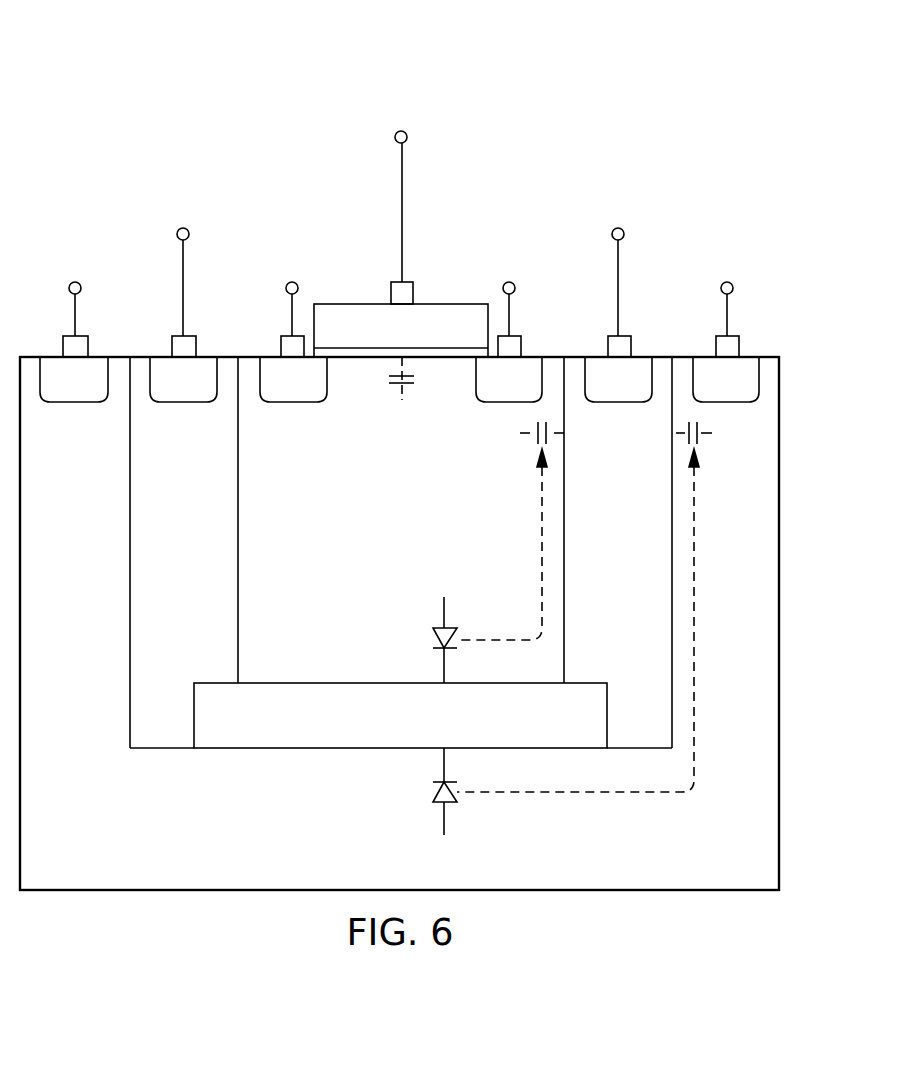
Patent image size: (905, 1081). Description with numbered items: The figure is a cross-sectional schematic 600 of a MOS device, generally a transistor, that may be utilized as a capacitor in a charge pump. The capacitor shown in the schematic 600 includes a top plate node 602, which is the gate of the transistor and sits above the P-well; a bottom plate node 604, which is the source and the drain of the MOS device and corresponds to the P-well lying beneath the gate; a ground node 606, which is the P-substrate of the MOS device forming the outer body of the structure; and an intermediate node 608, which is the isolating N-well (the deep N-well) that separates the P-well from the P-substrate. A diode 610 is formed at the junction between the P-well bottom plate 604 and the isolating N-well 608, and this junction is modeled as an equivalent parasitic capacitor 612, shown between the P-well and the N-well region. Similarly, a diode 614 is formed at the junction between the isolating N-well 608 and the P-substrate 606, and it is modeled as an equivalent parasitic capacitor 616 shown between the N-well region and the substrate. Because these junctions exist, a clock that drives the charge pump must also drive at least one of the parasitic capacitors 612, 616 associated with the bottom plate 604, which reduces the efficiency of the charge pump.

The cross-sectional schematic 600 is at (113, 58).
The top plate node 602 is at (372, 312).
The bottom plate node 604 is at (421, 577).
The ground node 606 is at (247, 880).
The intermediate node 608 is at (335, 731).
The diode 610 is at (452, 628).
The parasitic capacitor 612 is at (542, 422).
The diode 614 is at (455, 803).
The parasitic capacitor 616 is at (697, 440).